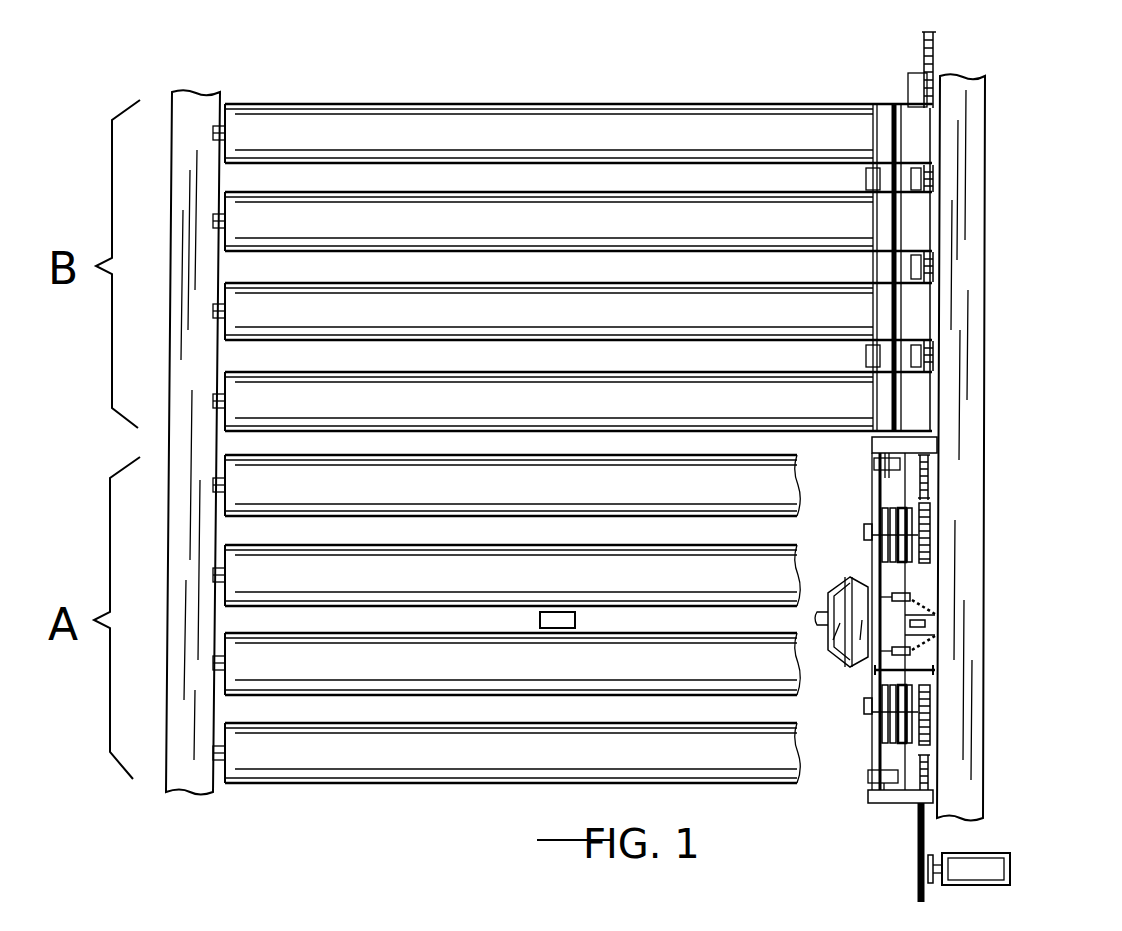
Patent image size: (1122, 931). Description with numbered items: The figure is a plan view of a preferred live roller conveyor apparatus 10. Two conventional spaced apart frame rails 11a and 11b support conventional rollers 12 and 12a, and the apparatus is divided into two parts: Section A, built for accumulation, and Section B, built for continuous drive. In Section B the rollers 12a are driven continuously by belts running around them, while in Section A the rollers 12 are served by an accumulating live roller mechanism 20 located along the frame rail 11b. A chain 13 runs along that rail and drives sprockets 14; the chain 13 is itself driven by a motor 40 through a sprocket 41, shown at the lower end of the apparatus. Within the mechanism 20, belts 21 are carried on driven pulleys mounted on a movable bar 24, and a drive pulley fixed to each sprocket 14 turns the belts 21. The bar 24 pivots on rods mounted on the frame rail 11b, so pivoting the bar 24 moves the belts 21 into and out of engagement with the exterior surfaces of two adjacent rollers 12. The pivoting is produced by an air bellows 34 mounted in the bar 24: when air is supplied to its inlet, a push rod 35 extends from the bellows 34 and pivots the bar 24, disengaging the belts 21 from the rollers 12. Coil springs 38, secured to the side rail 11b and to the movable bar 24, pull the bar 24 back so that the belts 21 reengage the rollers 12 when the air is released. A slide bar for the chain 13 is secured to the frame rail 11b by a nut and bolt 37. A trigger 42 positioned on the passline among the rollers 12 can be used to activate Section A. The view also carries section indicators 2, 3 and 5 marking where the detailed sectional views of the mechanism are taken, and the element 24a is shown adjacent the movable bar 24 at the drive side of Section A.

The live roller apparatus 10 is at (1013, 388).
The frame rail 11a is at (170, 485).
The frame rail 11b is at (960, 297).
The roller 12 is at (430, 455).
The roller 12a is at (440, 102).
The chain 13 is at (934, 52).
The sprocket 14 is at (930, 530).
The accumulating live roller mechanism 20 is at (871, 620).
The belt 21 is at (895, 498).
The movable bar 24 is at (872, 482).
The drive motor 24a is at (837, 608).
The air bellows 34 is at (868, 688).
The push rod 35 is at (910, 652).
The nut and bolt 37 is at (935, 625).
The coil spring 38 is at (906, 601).
The motor 40 is at (1010, 868).
The sprocket 41 is at (917, 878).
The trigger 42 is at (540, 620).
The section line 2 is at (815, 435).
The section line 3 is at (978, 472).
The section line 5 is at (898, 74).